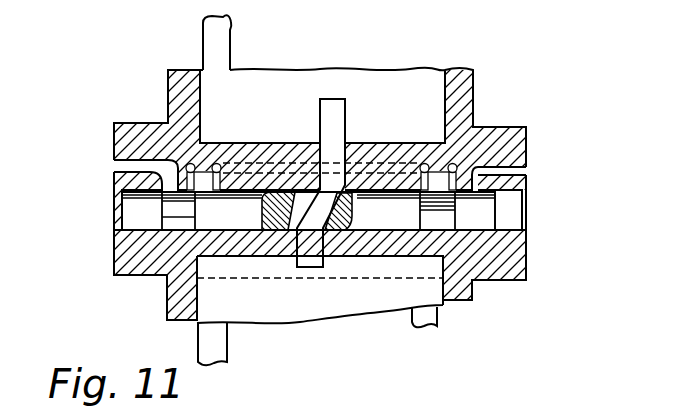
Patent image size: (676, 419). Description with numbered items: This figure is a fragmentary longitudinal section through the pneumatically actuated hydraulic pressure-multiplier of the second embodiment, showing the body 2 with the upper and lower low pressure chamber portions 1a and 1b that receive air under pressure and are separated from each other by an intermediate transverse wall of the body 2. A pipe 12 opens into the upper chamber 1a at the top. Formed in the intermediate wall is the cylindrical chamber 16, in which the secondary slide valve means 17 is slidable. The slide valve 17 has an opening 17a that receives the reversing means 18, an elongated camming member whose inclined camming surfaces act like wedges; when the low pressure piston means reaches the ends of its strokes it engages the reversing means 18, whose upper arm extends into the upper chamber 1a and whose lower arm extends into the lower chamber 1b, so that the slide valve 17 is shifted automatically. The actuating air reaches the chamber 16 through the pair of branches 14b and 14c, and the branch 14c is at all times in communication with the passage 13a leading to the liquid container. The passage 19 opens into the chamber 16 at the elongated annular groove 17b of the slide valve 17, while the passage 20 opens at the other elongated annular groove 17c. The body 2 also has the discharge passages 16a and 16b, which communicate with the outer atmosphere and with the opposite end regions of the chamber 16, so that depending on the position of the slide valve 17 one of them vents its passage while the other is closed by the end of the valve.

The body 2 is at (148, 277).
The upper low pressure chamber portion 1a is at (288, 86).
The lower low pressure chamber portion 1b is at (316, 308).
The inlet pipe 12 is at (228, 12).
The passage 13a is at (414, 327).
The reversing means 18 is at (344, 123).
The passage 19 is at (190, 163).
The branch 14b is at (215, 162).
The branch 14c is at (424, 163).
The passage 20 is at (452, 163).
The discharge passage 16a is at (122, 168).
The discharge passage 16b is at (528, 169).
The cylindrical chamber 16 is at (510, 213).
The secondary slide valve means 17 is at (128, 211).
The opening 17a is at (258, 256).
The elongated annular groove 17b is at (177, 225).
The elongated annular groove 17c is at (425, 229).